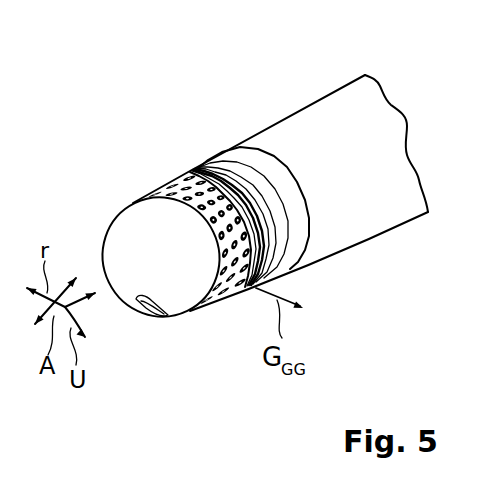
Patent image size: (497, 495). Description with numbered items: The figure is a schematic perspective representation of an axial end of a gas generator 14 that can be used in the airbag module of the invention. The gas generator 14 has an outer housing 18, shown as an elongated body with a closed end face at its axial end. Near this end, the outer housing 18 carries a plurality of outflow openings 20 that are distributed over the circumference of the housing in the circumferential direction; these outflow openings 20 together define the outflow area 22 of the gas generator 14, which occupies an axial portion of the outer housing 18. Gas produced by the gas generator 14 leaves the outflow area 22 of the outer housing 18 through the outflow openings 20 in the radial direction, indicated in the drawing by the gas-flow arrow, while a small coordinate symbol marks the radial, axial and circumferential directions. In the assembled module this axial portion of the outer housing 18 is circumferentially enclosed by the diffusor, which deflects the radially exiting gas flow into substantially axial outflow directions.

The gas generator 14 is at (299, 122).
The outer housing 18 is at (192, 306).
The outflow openings 20 is at (245, 248).
The outflow area 22 is at (184, 159).